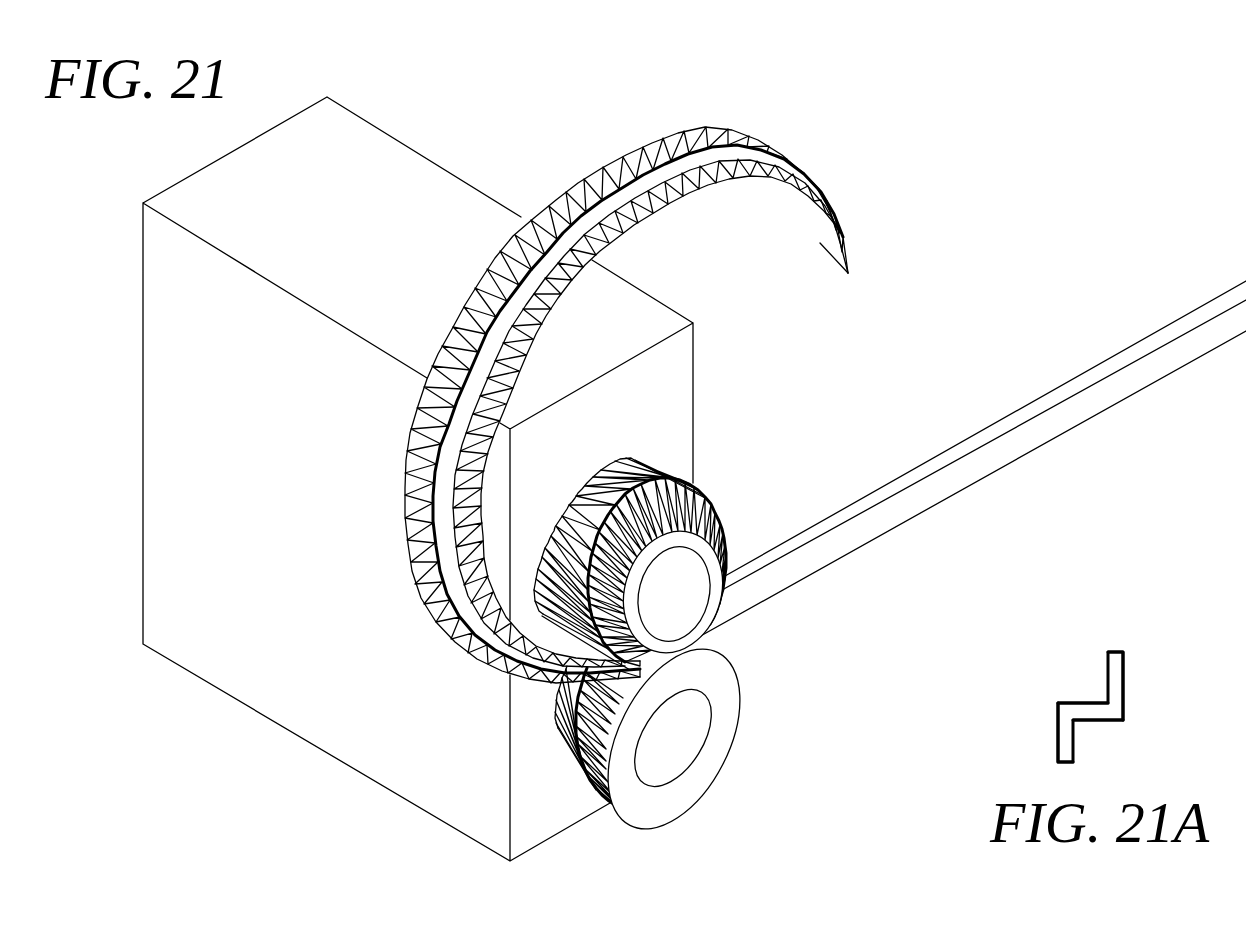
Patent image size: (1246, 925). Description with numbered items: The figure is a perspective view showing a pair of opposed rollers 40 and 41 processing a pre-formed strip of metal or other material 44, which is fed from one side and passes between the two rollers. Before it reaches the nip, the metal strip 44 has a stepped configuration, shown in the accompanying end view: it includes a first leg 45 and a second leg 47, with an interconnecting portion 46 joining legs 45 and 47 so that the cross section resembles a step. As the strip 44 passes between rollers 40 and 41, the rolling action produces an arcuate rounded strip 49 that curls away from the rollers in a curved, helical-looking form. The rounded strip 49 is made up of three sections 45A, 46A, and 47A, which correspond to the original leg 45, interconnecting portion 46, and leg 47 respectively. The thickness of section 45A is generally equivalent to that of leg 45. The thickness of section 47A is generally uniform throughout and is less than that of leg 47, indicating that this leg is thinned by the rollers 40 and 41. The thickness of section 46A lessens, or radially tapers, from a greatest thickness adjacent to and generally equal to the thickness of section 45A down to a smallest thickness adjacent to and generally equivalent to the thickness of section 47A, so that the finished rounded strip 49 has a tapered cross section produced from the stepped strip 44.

In FIG. 21, the roller 40 is at (705, 489).
In FIG. 21, the roller 41 is at (657, 827).
In FIG. 21, the metal strip 44 is at (982, 427).
In FIG. 21A, the metal strip 44 is at (1081, 668).
In FIG. 21A, the leg 45 is at (1058, 735).
In FIG. 21A, the portion 46 is at (1106, 724).
In FIG. 21A, the leg 47 is at (1127, 683).
In FIG. 21, the section 45A is at (828, 280).
In FIG. 21, the section 46A is at (815, 205).
In FIG. 21, the section 47A is at (652, 137).
In FIG. 21, the arcuate rounded strip 49 is at (645, 381).